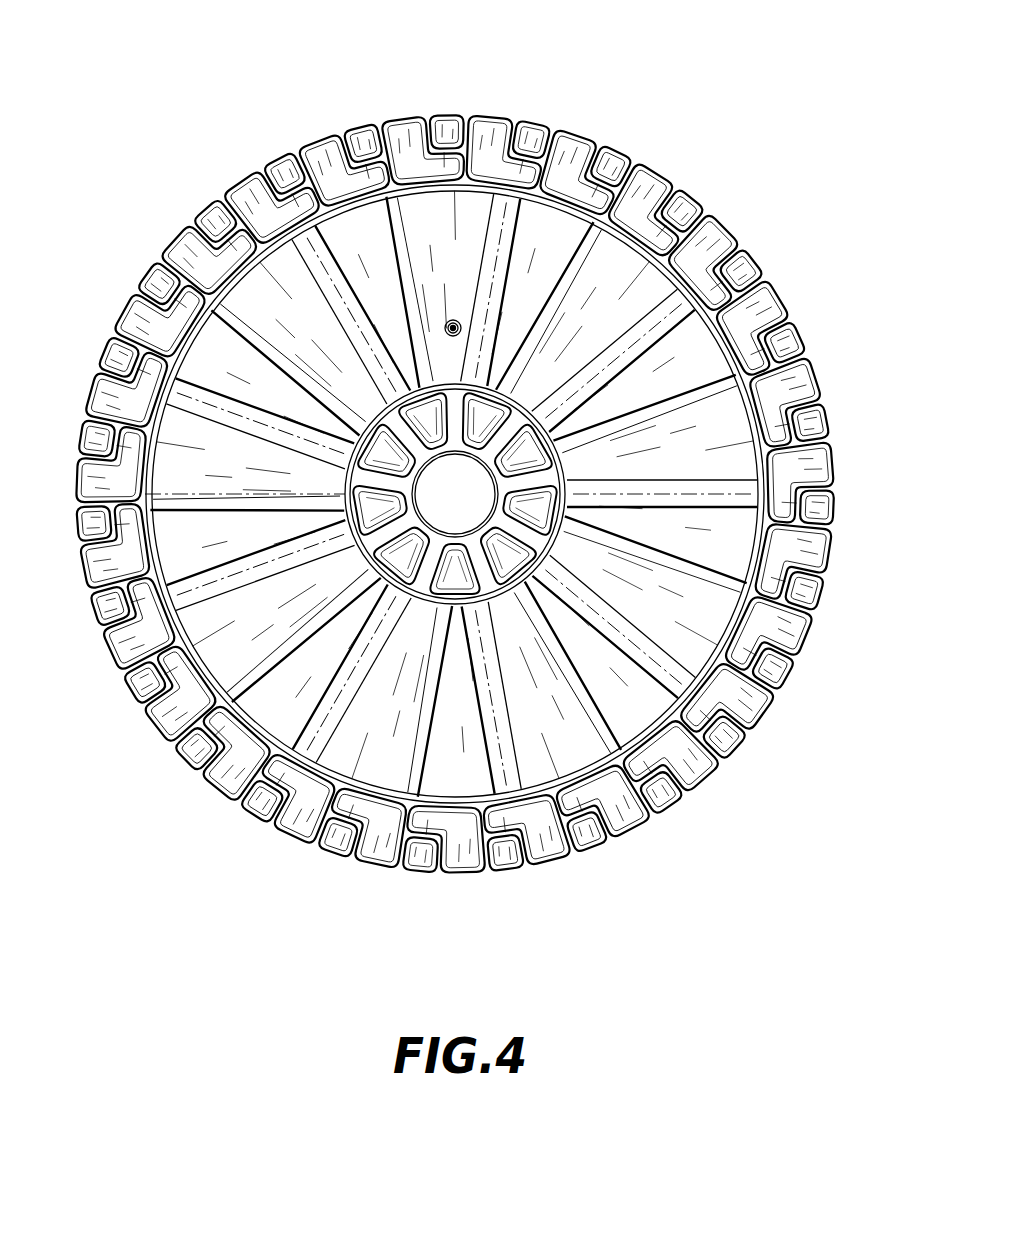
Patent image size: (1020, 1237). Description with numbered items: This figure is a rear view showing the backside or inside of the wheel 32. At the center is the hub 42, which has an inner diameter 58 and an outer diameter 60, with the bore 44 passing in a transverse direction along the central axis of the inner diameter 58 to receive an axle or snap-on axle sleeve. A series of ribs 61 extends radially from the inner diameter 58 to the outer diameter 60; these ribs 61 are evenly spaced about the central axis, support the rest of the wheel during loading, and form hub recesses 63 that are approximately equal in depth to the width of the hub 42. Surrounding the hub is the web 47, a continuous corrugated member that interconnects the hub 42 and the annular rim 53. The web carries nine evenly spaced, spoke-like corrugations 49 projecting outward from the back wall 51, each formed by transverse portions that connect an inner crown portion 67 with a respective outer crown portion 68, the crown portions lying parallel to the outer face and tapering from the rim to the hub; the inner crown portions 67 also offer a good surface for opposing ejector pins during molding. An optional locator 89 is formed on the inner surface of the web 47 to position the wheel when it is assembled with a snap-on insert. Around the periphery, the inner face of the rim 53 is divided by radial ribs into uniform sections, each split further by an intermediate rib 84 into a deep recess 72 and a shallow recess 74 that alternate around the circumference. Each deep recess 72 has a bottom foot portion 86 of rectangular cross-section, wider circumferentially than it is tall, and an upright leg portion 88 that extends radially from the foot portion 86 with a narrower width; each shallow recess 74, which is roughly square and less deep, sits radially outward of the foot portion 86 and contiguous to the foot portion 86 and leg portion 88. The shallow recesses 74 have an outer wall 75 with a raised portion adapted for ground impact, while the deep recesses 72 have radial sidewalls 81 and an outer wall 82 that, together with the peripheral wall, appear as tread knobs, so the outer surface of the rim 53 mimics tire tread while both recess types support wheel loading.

The wheel 32 is at (664, 164).
The hub 42 is at (557, 478).
The bore 44 is at (443, 497).
The web 47 is at (730, 441).
The corrugations 49 is at (683, 268).
The back wall 51 is at (558, 770).
The annular rim 53 is at (407, 122).
The inner diameter 58 is at (700, 642).
The outer diameter 60 is at (463, 523).
The ribs 61 is at (440, 570).
The hub recesses 63 is at (403, 553).
The inner crown portion 67 is at (700, 742).
The outer crown portion 68 is at (755, 728).
The deep recesses 72 is at (487, 133).
The shallow recesses 74 is at (360, 146).
The outer wall 75 is at (658, 308).
The radial sidewalls 81 is at (530, 847).
The outer wall 82 is at (655, 800).
The intermediate rib 84 is at (735, 335).
The foot portion 86 is at (296, 205).
The leg portion 88 is at (253, 178).
The locator 89 is at (450, 318).